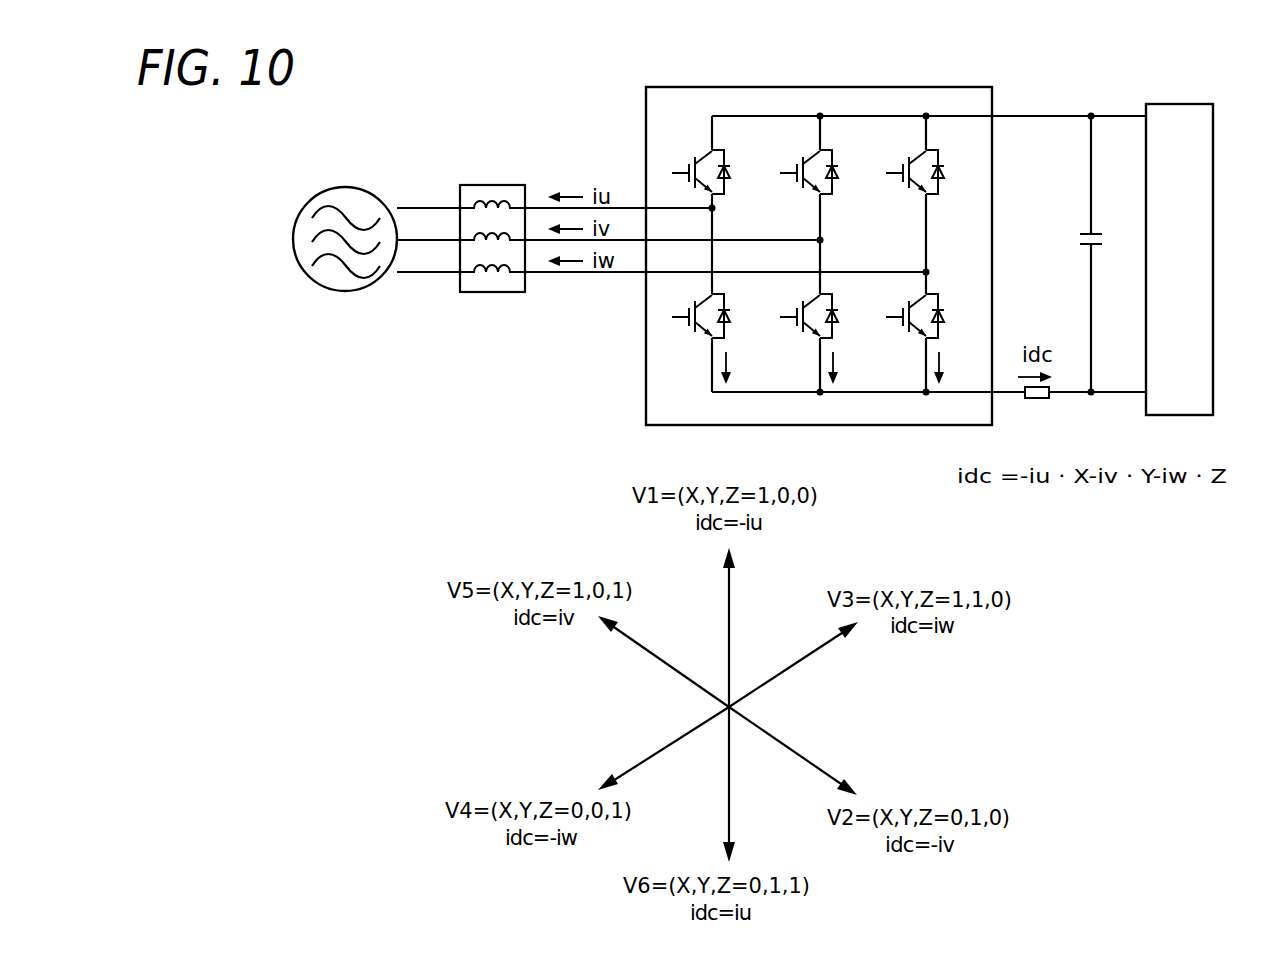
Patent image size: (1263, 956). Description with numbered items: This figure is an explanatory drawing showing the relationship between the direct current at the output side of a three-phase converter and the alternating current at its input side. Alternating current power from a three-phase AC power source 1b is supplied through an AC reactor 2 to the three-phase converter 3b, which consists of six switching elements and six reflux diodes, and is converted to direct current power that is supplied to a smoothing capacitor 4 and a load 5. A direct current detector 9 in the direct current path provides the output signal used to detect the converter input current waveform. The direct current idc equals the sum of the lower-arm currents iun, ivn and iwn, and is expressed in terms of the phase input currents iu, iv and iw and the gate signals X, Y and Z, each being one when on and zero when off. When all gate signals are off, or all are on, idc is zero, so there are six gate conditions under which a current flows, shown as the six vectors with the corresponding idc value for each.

The three-phase AC power source 1b is at (351, 187).
The AC reactor 2 is at (479, 293).
The three-phase converter 3b is at (693, 100).
The smoothing capacitor 4 is at (1087, 232).
The load 5 is at (1213, 308).
The direct current detector 9 is at (1040, 399).